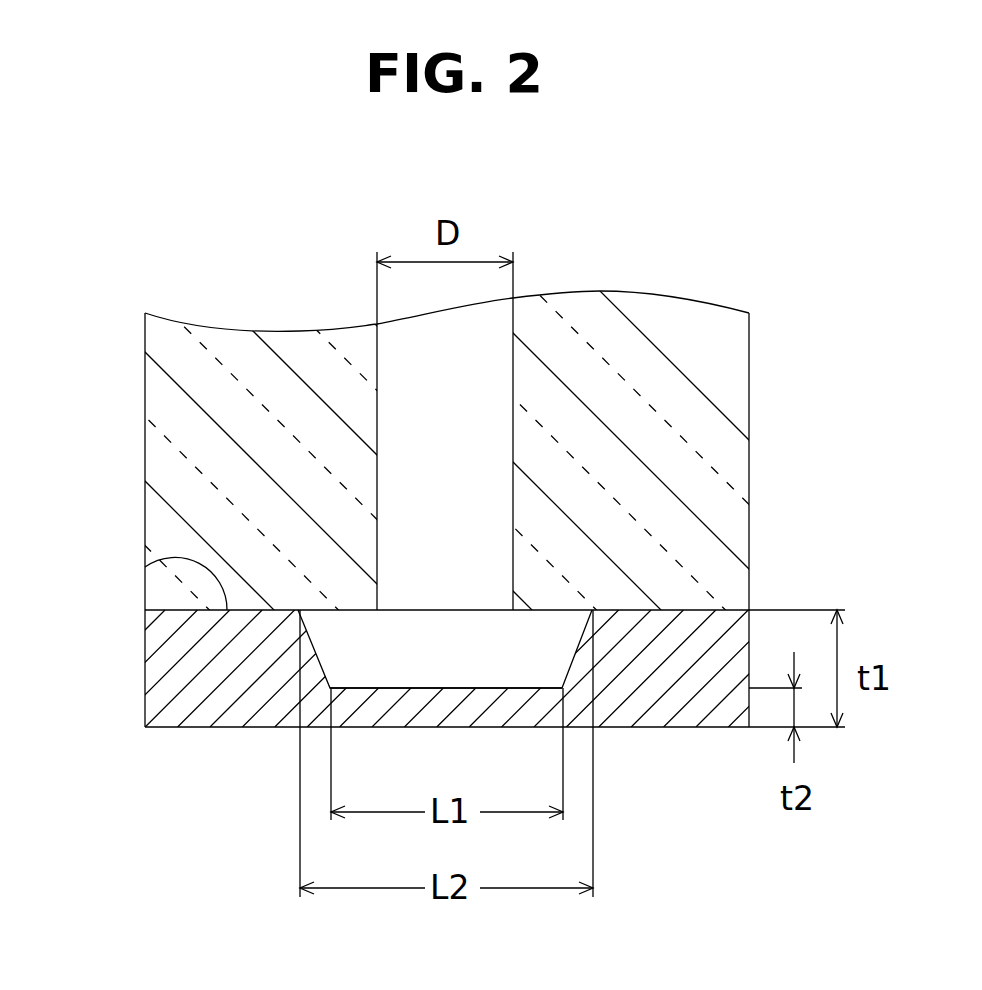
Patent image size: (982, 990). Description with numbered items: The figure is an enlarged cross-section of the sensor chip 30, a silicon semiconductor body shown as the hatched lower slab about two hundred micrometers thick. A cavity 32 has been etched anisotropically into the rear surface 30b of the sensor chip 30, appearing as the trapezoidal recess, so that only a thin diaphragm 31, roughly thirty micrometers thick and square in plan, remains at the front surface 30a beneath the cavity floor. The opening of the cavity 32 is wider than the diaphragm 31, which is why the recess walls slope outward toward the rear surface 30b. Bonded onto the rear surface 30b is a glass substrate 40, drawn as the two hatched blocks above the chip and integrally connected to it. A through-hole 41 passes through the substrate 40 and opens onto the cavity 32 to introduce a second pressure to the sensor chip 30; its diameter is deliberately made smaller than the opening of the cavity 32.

The sensor chip 30 is at (145, 662).
The front surface 30a is at (218, 727).
The rear surface 30b is at (147, 566).
The diaphragm 31 is at (435, 708).
The cavity 32 is at (580, 626).
The substrate 40 is at (748, 360).
The through-hole 41 is at (485, 460).